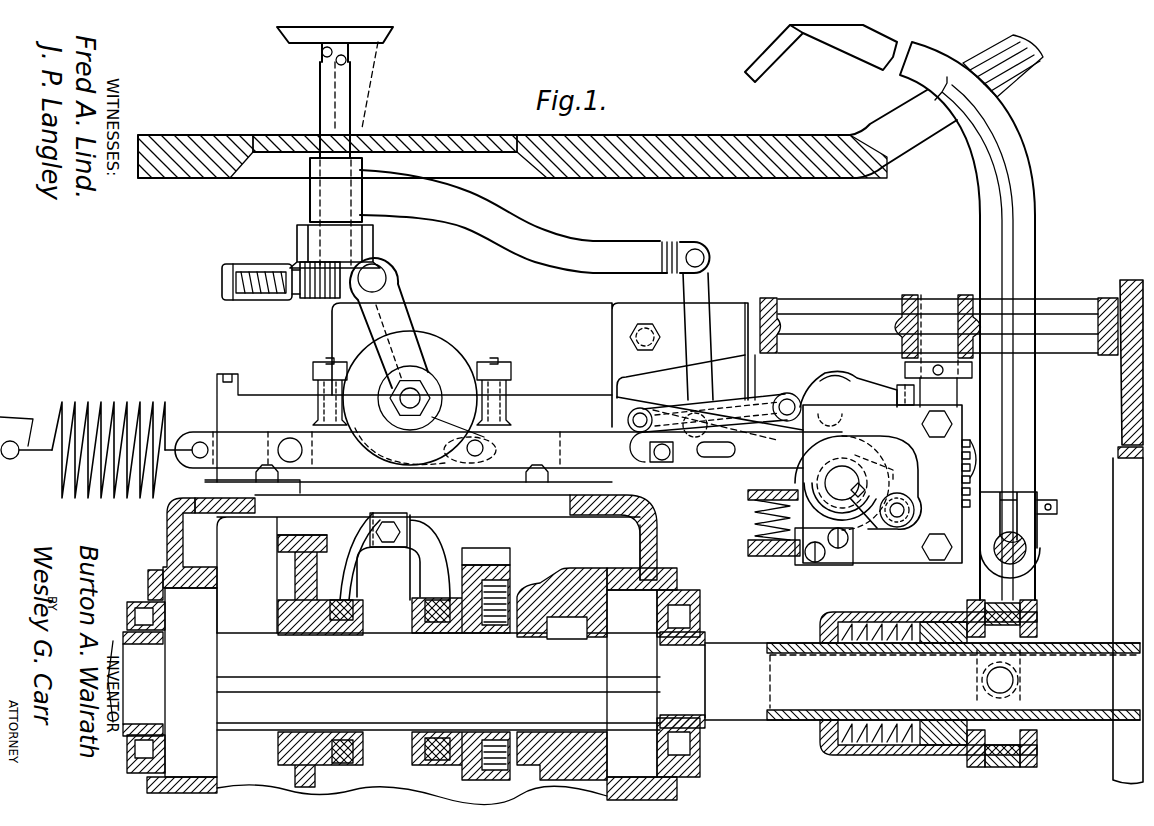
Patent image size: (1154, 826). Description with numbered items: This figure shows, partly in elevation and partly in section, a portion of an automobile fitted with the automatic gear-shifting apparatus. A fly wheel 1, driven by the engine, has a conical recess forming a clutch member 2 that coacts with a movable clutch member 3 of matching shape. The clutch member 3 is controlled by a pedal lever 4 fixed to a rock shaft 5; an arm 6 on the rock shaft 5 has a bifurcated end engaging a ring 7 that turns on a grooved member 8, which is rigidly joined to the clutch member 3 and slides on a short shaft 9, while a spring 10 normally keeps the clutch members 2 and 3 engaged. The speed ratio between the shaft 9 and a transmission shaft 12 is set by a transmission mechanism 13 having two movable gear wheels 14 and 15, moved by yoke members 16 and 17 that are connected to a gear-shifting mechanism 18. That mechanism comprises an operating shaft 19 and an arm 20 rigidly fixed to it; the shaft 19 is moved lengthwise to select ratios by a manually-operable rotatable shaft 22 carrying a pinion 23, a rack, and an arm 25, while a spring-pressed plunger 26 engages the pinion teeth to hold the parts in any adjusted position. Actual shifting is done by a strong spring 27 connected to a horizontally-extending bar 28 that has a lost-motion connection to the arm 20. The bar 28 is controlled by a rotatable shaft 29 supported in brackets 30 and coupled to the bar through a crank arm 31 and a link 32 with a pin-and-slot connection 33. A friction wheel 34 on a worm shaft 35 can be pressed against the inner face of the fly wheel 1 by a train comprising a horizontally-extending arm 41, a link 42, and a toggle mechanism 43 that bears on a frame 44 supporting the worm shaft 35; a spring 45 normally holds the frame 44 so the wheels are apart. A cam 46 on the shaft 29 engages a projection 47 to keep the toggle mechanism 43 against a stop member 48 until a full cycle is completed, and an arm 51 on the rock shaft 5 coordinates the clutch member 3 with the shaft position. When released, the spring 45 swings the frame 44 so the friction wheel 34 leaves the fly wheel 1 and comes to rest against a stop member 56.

The fly wheel 1 is at (1122, 292).
The clutch member 2 is at (1118, 446).
The movable clutch member 3 is at (1118, 472).
The pedal lever 4 is at (1028, 186).
The rock shaft 5 is at (1041, 549).
The arm 6 is at (1036, 578).
The ring 7 is at (998, 767).
The grooved member 8 is at (1037, 752).
The short shaft 9 is at (735, 655).
The spring 10 is at (870, 625).
The transmission shaft 12 is at (113, 641).
The transmission mechanism 13 is at (636, 549).
The movable gear wheel 14 is at (290, 573).
The movable gear wheel 15 is at (503, 575).
The yoke member 16 is at (360, 571).
The yoke member 17 is at (428, 564).
The gear-shifting mechanism 18 is at (337, 331).
The operating shaft 19 is at (416, 396).
The arm 20 is at (450, 424).
The manually-operable rotatable shaft 22 is at (345, 120).
The pinion 23 is at (316, 300).
The arm 25 is at (396, 327).
The spring-pressed plunger 26 is at (264, 238).
The spring 27 is at (88, 412).
The horizontally-extending bar 28 is at (220, 434).
The rotatable shaft 29 is at (862, 530).
The brackets 30 is at (730, 465).
The crank arm 31 is at (866, 524).
The link 32 is at (727, 462).
The pin-and-slot connection 33 is at (664, 465).
The friction wheel 34 is at (818, 312).
The worm shaft 35 is at (950, 393).
The horizontally-extending arm 41 is at (592, 250).
The link 42 is at (712, 270).
The toggle mechanism 43 is at (768, 404).
The frame 44 is at (913, 557).
The spring 45 is at (762, 507).
The cam 46 is at (893, 478).
The projection 47 is at (897, 405).
The stop member 48 is at (747, 378).
The arm 51 is at (972, 487).
The stop member 56 is at (750, 305).